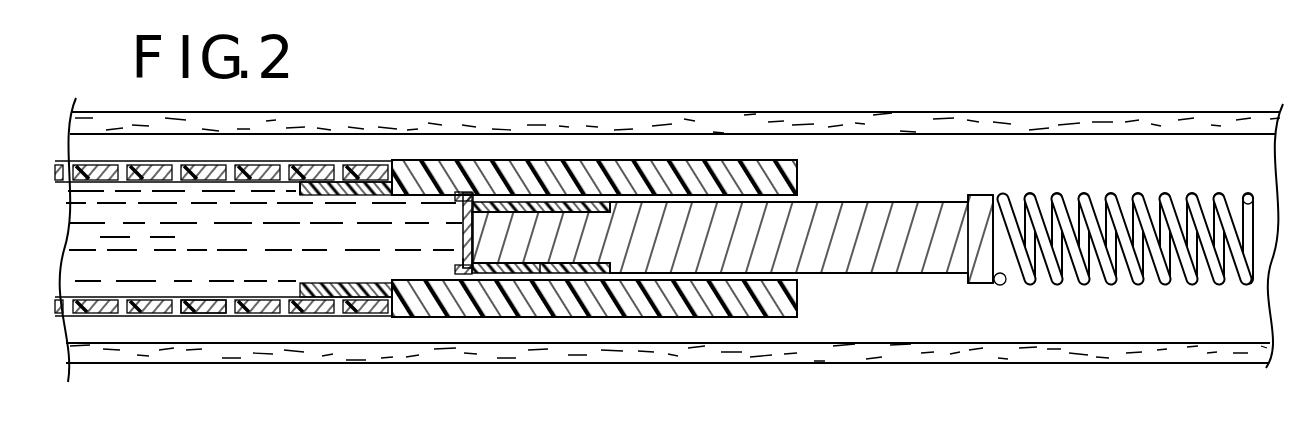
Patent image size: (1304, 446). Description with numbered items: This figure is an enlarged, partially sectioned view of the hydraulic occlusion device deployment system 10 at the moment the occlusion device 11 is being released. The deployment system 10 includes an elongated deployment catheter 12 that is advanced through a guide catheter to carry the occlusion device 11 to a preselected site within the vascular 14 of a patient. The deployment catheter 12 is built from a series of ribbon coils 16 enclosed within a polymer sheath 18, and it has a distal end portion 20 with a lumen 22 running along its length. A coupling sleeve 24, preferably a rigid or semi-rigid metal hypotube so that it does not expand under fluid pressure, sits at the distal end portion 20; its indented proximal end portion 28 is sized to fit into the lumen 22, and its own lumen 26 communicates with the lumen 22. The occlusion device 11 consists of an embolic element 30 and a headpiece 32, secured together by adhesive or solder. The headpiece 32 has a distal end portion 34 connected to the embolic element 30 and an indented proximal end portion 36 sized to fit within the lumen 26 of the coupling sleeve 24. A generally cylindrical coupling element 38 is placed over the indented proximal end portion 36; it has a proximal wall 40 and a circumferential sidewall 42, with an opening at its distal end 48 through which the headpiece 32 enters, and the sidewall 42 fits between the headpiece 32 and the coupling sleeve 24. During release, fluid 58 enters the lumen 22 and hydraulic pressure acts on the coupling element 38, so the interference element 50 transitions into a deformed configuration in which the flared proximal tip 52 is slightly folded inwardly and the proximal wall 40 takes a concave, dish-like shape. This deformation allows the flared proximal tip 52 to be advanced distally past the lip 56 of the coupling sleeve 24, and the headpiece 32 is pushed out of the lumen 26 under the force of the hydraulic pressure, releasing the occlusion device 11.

The deployment system 10 is at (113, 143).
The occlusion device 11 is at (1028, 162).
The deployment catheter 12 is at (281, 163).
The vascular 14 is at (783, 118).
The ribbon coils 16 is at (258, 307).
The polymer sheath 18 is at (220, 307).
The distal end portion 20 is at (373, 300).
The lumen 22 is at (136, 237).
The coupling sleeve 24 is at (618, 175).
The lumen 26 is at (427, 243).
The indented proximal end portion 28 is at (334, 184).
The embolic element 30 is at (1088, 200).
The headpiece 32 is at (768, 252).
The distal end portion 34 is at (957, 248).
The indented proximal end portion 36 is at (534, 233).
The coupling element 38 is at (468, 207).
The proximal wall 40 is at (468, 233).
The circumferential sidewall 42 is at (548, 272).
The distal end 48 is at (592, 272).
The interference element 50 is at (470, 268).
The flared proximal tip 52 is at (470, 203).
The lip 56 is at (293, 189).
The fluid 58 is at (212, 250).